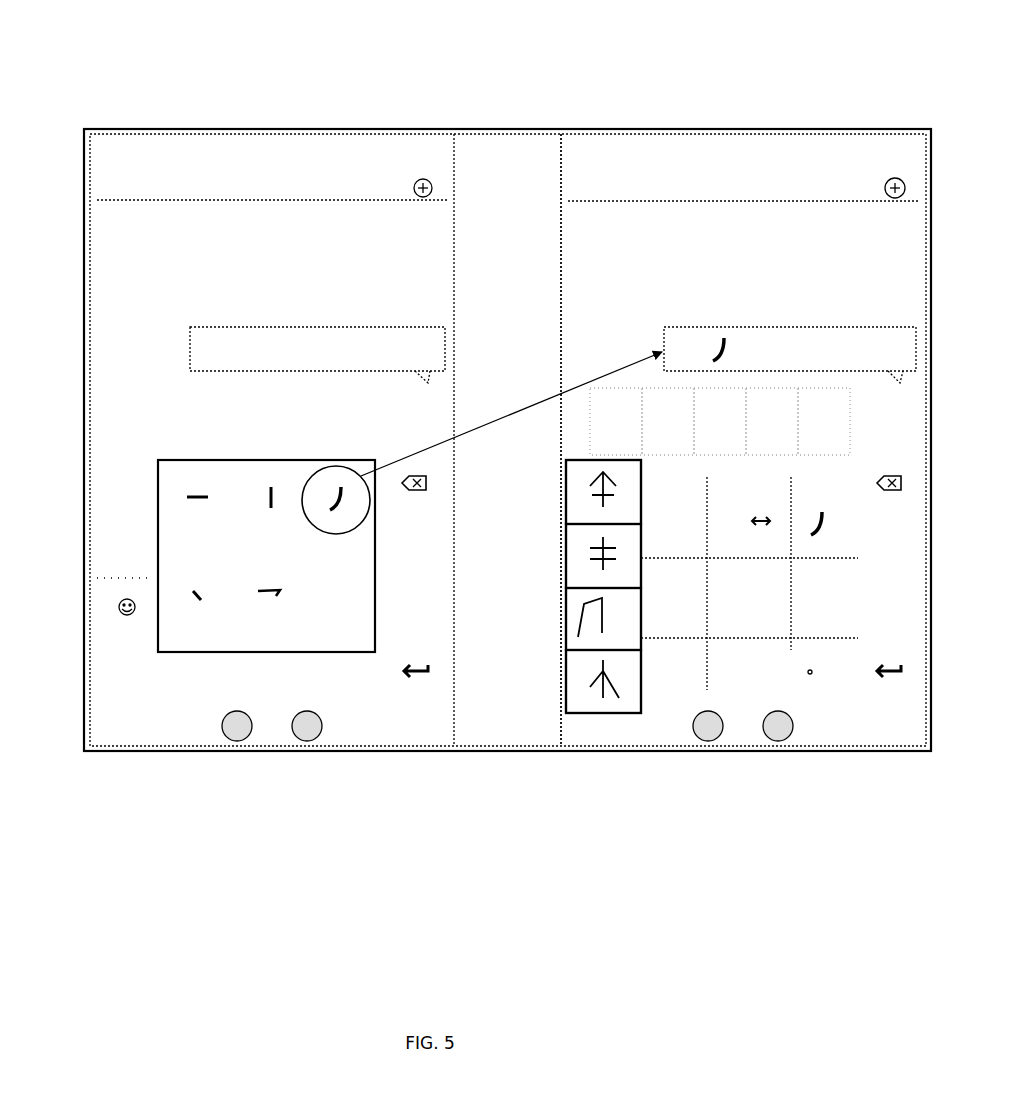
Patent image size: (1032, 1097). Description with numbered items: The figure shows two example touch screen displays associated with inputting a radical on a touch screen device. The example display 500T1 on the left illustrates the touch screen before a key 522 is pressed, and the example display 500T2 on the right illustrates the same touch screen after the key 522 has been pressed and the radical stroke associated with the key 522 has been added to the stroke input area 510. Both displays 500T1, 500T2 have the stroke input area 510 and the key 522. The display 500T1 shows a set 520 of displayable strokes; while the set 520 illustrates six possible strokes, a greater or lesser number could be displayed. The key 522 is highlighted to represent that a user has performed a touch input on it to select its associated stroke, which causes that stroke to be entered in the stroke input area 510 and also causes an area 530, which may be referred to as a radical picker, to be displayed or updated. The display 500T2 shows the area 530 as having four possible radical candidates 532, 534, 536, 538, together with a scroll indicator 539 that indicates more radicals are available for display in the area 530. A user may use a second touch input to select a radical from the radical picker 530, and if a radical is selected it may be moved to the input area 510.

The example display 500T1 is at (259, 128).
The example display 500T2 is at (742, 128).
The stroke input area 510 is at (375, 322).
The set of displayable strokes 520 is at (157, 592).
The key 522 is at (300, 485).
The radical picker area 530 is at (553, 562).
The radical candidate 532 is at (560, 280).
The radical candidate 534 is at (562, 483).
The radical candidate 536 is at (562, 536).
The radical candidate 538 is at (562, 627).
The scroll indicator 539 is at (562, 684).